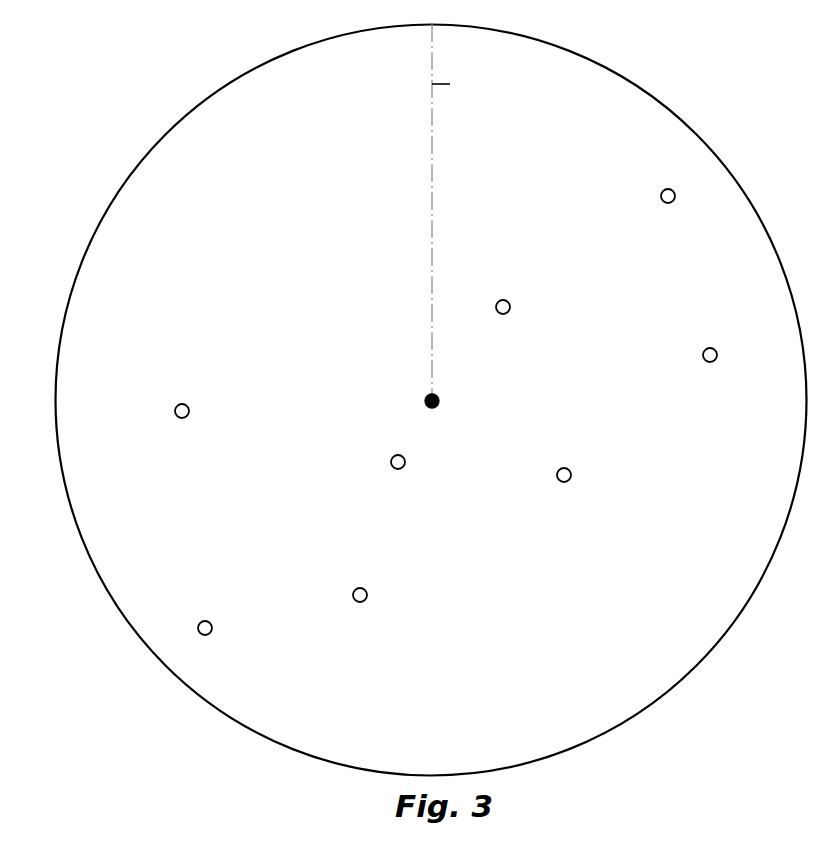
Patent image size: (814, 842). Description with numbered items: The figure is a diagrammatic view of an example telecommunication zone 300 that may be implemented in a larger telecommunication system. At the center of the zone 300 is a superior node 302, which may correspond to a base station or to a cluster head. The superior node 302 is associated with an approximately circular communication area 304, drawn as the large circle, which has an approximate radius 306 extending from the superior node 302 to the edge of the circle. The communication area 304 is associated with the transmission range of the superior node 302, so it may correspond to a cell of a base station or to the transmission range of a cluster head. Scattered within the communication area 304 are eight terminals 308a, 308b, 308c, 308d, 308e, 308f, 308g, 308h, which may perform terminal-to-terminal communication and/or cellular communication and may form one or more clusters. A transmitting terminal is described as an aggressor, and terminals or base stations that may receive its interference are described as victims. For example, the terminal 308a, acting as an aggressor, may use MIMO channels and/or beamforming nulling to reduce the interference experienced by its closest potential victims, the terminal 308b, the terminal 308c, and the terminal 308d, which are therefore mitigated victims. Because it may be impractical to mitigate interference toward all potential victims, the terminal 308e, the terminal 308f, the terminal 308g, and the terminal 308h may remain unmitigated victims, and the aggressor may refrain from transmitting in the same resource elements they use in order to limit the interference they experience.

The telecommunication zone 300 is at (138, 58).
The superior node 302 is at (439, 401).
The communication area 304 is at (391, 69).
The radius 306 is at (450, 84).
The terminal 308a is at (212, 630).
The terminal 308b is at (367, 597).
The terminal 308c is at (189, 413).
The terminal 308d is at (405, 464).
The terminal 308e is at (571, 477).
The terminal 308f is at (510, 309).
The terminal 308g is at (717, 357).
The terminal 308h is at (675, 198).